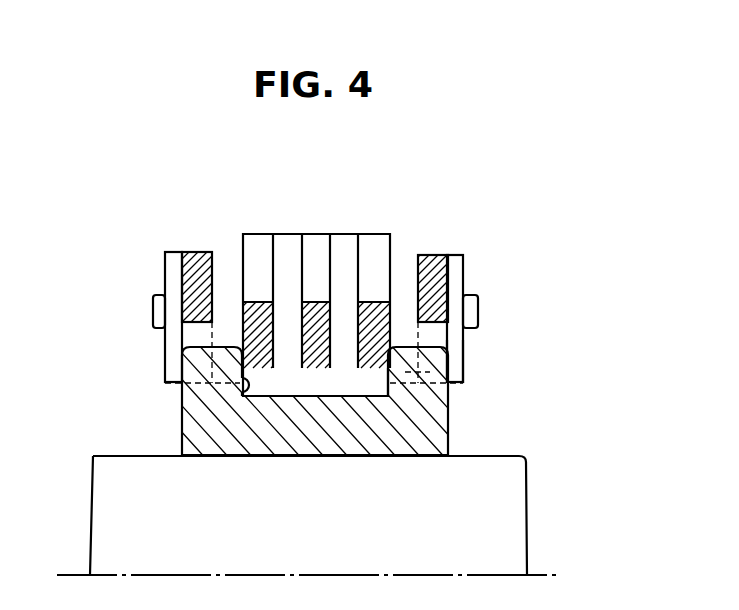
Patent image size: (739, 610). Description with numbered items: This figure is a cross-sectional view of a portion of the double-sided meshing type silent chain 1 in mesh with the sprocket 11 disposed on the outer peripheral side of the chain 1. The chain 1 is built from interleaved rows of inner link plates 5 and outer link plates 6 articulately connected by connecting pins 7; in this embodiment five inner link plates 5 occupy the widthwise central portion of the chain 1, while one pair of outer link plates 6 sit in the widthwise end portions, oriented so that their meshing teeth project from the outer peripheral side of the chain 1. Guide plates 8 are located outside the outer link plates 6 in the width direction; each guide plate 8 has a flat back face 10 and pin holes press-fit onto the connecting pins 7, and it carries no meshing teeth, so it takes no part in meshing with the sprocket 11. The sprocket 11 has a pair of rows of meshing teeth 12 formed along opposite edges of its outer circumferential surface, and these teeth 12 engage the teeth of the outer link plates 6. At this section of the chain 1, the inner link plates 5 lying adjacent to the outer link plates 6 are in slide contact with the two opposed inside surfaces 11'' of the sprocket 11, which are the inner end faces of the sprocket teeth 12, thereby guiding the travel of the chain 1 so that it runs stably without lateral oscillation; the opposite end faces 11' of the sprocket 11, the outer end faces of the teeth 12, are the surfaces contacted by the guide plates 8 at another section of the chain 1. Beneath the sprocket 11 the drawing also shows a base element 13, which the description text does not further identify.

The double-sided meshing type silent chain 1 is at (310, 226).
The inner link plates 5 is at (260, 247).
The outer link plates 6 is at (225, 259).
The connecting pins 7 is at (475, 313).
The guide plates 8 is at (455, 363).
The flat back face 10 is at (177, 251).
The sprocket 11 is at (377, 401).
The opposite end faces 11' is at (270, 360).
The opposed inside surfaces 11'' is at (162, 412).
The meshing teeth of the sprocket 12 is at (407, 370).
The base 13 is at (505, 520).